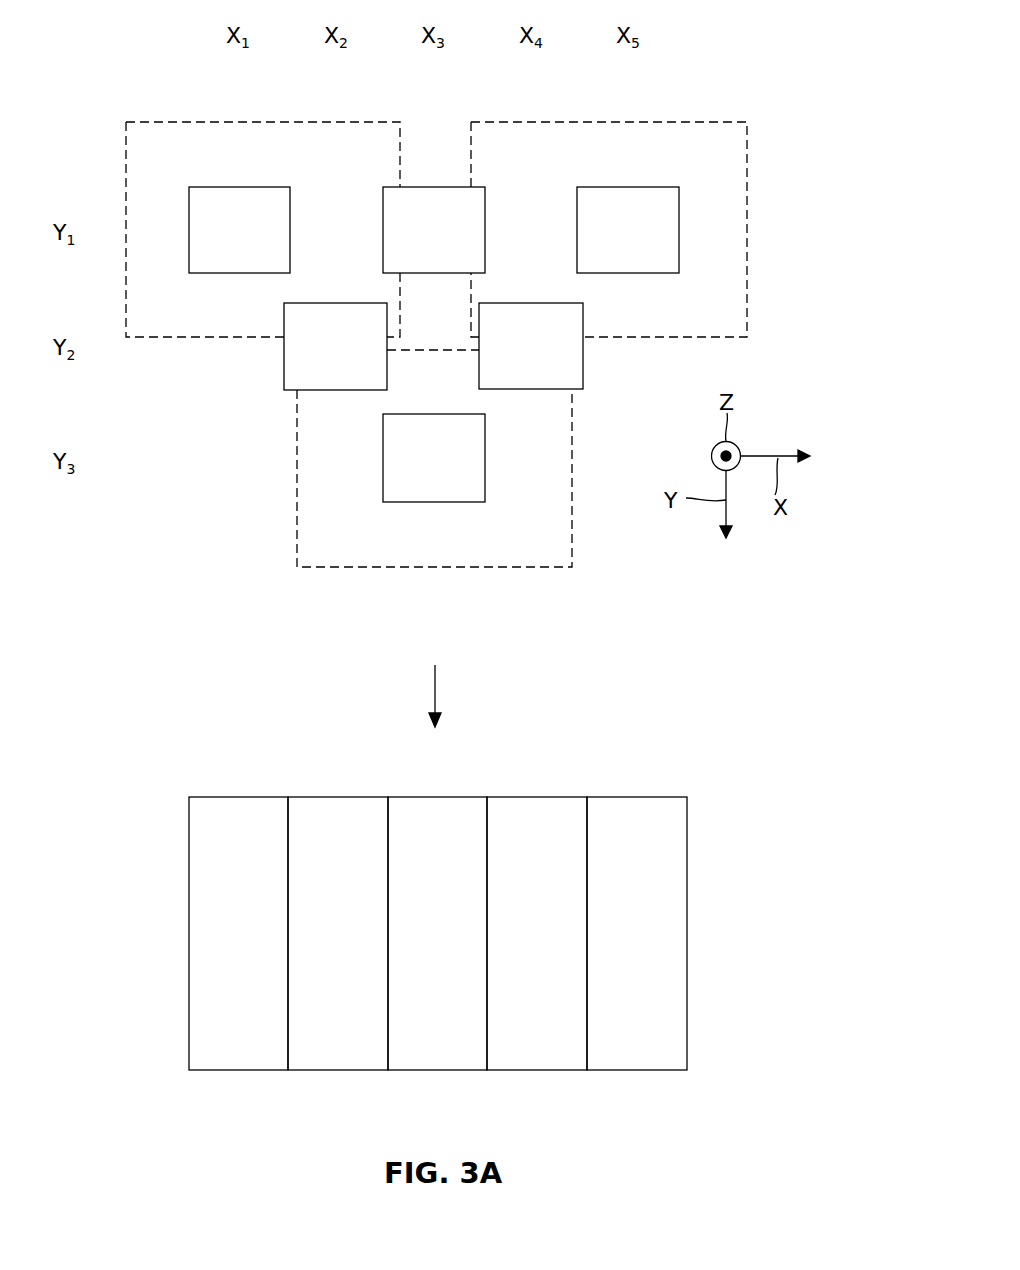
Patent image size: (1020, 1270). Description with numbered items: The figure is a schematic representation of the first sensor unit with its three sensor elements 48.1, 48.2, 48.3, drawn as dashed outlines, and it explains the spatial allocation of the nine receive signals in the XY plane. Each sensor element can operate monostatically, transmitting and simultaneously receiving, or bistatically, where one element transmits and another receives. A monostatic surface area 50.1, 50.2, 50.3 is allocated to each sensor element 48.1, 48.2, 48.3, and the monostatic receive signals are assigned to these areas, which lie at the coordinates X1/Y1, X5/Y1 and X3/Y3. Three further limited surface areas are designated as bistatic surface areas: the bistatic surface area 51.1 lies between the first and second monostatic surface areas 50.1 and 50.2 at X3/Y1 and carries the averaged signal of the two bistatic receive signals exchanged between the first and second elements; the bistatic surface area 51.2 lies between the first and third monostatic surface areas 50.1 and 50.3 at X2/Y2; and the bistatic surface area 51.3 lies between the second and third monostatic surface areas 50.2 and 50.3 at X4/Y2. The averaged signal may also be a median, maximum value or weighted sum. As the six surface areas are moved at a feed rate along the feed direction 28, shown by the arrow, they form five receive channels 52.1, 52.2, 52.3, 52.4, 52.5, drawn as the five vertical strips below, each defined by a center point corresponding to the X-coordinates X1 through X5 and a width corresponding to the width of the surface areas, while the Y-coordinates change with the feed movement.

The feed direction 28 is at (435, 697).
The first sensor element 48.1 is at (162, 165).
The second sensor element 48.2 is at (706, 165).
The third sensor element 48.3 is at (436, 530).
The first monostatic surface area 50.1 is at (239, 230).
The second monostatic surface area 50.2 is at (628, 230).
The third monostatic surface area 50.3 is at (434, 458).
The first bistatic surface area 51.1 is at (434, 230).
The second bistatic surface area 51.2 is at (335, 346).
The third bistatic surface area 51.3 is at (531, 346).
The first receive channel 52.1 is at (238, 933).
The second receive channel 52.2 is at (338, 933).
The third receive channel 52.3 is at (437, 933).
The fourth receive channel 52.4 is at (537, 933).
The fifth receive channel 52.5 is at (637, 933).